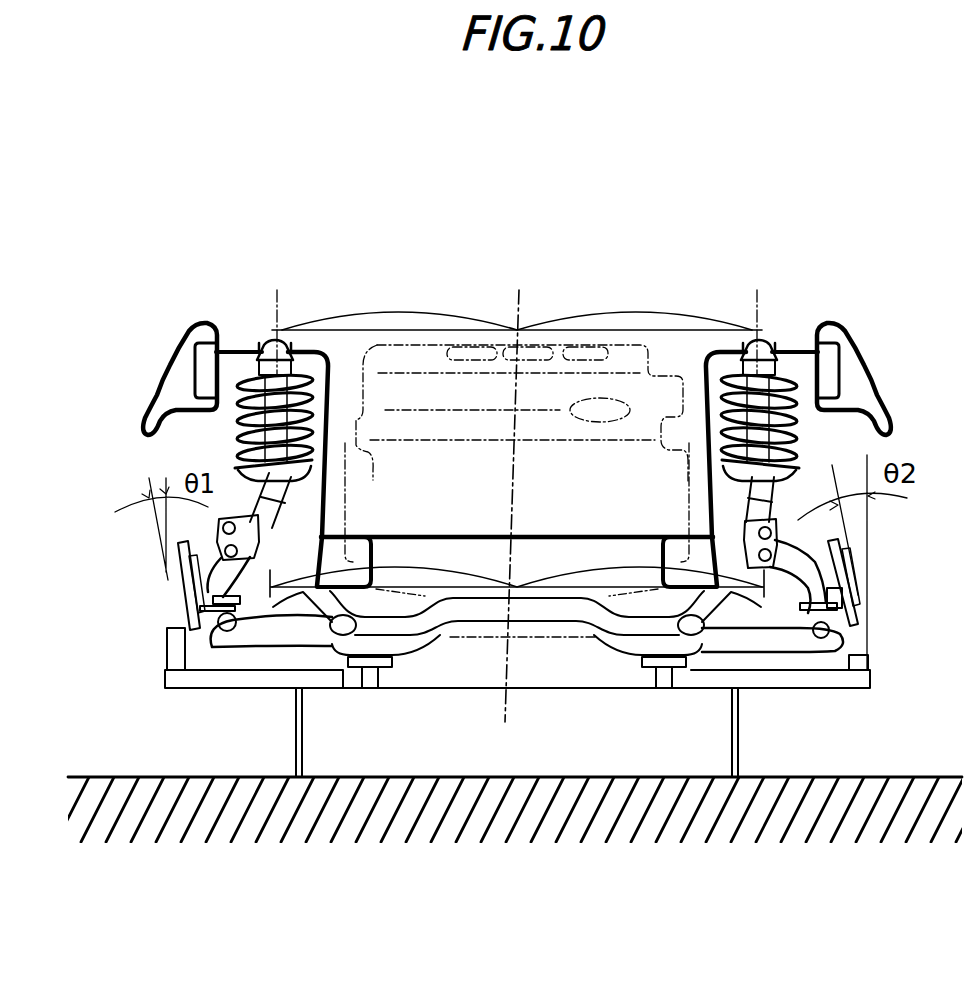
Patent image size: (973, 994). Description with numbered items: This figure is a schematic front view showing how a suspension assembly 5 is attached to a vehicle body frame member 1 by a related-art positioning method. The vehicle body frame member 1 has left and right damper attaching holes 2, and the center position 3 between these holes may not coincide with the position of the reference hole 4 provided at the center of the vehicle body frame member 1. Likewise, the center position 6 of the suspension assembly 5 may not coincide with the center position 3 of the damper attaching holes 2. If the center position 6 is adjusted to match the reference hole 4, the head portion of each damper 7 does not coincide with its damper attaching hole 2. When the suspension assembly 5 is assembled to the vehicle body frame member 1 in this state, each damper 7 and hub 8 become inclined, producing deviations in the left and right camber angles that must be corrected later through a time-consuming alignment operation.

The vehicle body frame member 1 is at (185, 328).
The damper attaching holes 2 is at (288, 337).
The center position of the damper attaching holes 3 is at (518, 292).
The reference hole 4 is at (498, 533).
The suspension assembly 5 is at (597, 635).
The center position of the suspension assembly 6 is at (507, 700).
The damper 7 is at (320, 446).
The hub 8 is at (164, 590).